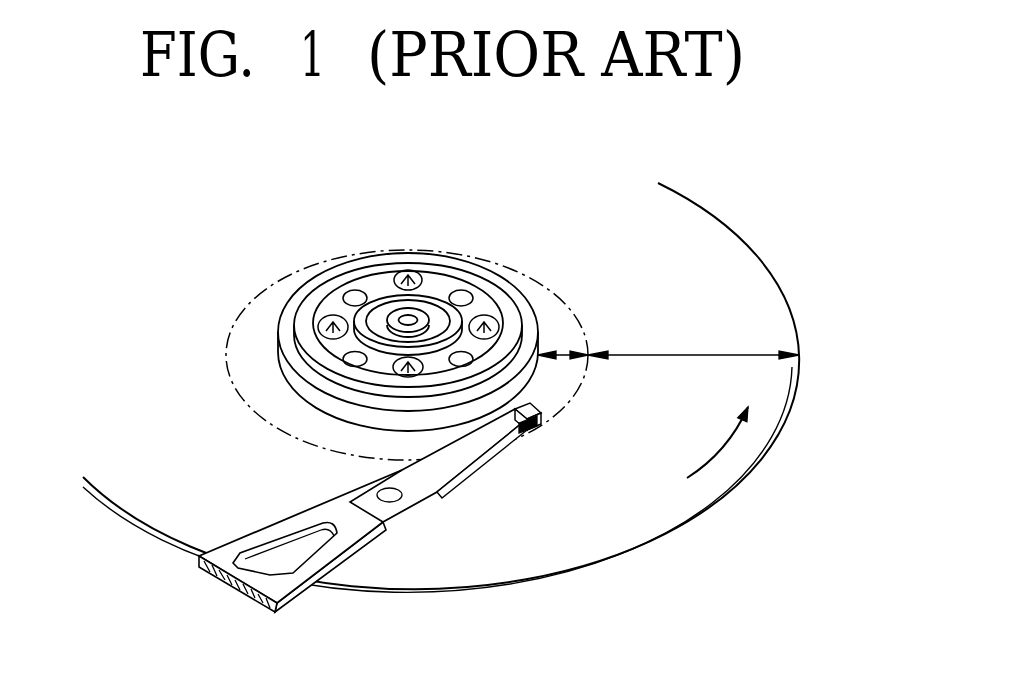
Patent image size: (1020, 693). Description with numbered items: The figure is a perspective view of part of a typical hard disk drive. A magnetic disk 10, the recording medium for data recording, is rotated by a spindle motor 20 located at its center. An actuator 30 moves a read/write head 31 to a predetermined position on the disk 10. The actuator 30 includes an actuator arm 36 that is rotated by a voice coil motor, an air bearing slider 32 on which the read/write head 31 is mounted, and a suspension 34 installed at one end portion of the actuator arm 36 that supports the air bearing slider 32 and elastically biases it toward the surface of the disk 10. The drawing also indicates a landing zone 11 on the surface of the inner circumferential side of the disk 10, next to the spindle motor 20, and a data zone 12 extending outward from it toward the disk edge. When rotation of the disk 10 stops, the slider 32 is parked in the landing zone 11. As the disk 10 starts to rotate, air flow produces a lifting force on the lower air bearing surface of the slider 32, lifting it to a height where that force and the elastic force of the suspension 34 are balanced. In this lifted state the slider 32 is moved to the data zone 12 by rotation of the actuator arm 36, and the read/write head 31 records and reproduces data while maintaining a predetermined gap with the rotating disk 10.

The magnetic disk 10 is at (755, 292).
The landing zone 11 is at (563, 355).
The data zone 12 is at (682, 355).
The spindle motor 20 is at (377, 282).
The actuator 30 is at (390, 538).
The read/write head 31 is at (537, 427).
The air bearing slider 32 is at (517, 435).
The suspension 34 is at (457, 482).
The actuator arm 36 is at (260, 538).